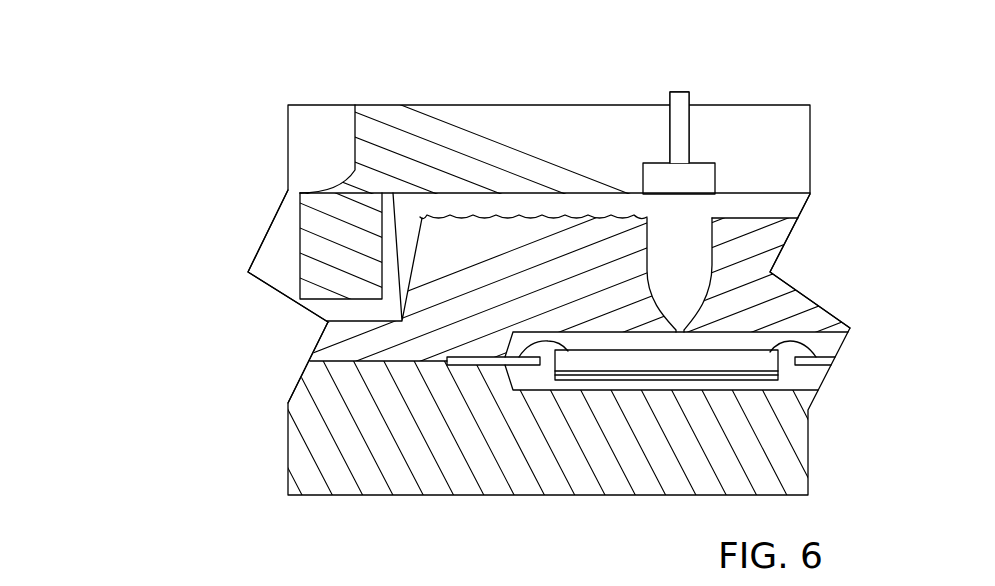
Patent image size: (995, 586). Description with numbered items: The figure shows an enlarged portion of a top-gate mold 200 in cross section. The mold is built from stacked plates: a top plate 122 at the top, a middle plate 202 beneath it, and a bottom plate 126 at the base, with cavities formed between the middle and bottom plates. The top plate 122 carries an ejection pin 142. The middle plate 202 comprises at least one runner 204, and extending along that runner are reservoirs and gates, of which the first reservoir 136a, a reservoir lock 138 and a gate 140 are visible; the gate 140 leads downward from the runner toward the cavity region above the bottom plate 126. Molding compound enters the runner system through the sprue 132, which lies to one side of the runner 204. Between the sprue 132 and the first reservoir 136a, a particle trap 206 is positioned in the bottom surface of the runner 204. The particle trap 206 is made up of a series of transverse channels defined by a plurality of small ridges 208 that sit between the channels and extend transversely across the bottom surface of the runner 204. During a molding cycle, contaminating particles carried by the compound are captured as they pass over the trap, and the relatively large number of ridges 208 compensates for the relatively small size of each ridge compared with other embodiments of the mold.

The mold 200 is at (742, 45).
The top plate 122 is at (338, 208).
The sprue 132 is at (402, 250).
The particle trap 206 is at (492, 205).
The ridges 208 is at (563, 217).
The ejection pins 142 is at (681, 92).
The reservoir lock 138 is at (700, 170).
The first reservoir 136a is at (677, 240).
The runner 204 is at (767, 212).
The gate 140 is at (770, 272).
The middle plate 202 is at (337, 333).
The bottom plate 126 is at (357, 413).